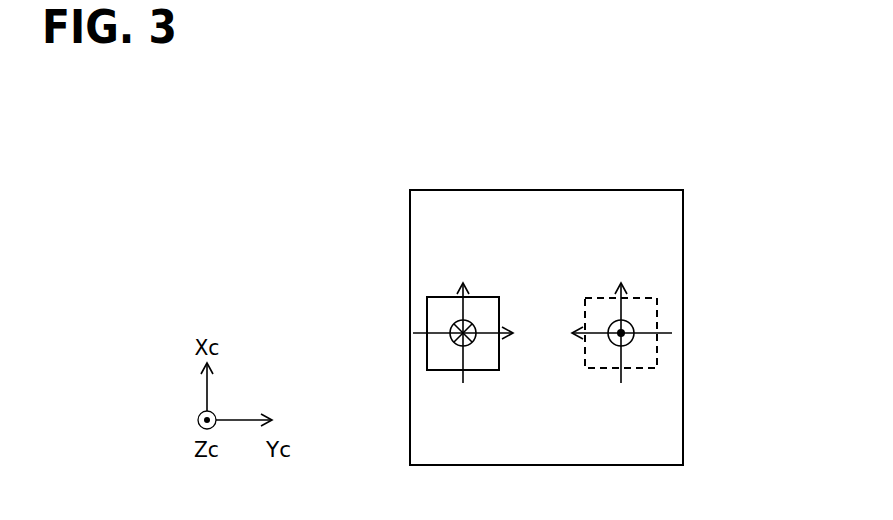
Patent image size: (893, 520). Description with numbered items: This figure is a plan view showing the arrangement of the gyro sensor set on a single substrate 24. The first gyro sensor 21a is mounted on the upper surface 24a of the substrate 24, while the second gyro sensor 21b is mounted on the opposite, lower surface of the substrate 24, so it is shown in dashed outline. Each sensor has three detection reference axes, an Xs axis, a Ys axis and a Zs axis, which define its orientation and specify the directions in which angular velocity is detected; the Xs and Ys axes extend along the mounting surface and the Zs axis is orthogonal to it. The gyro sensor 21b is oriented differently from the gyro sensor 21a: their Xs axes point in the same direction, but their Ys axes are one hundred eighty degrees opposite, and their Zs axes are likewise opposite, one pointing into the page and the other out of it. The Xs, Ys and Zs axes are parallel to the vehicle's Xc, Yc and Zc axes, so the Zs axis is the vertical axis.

The substrate 24 is at (613, 172).
The upper surface 24a is at (665, 217).
The first gyro sensor 21a is at (427, 298).
The second gyro sensor 21b is at (657, 310).